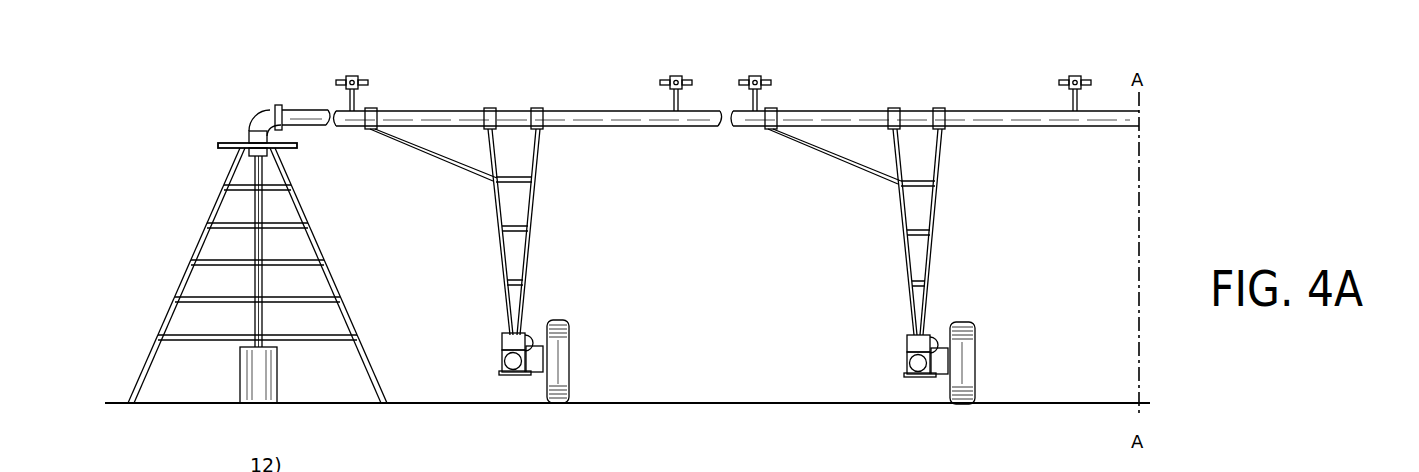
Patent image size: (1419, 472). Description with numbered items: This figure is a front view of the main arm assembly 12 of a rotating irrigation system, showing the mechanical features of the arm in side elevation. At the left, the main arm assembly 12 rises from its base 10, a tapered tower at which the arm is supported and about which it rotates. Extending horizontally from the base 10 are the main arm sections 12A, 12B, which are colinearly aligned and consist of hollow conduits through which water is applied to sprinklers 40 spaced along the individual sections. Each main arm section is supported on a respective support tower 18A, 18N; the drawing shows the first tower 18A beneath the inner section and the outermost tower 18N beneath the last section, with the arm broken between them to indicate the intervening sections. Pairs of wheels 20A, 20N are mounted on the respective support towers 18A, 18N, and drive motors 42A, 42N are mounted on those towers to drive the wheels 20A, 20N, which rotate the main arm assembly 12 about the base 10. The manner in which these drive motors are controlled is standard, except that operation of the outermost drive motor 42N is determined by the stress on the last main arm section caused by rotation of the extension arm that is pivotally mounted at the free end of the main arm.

The base 10 is at (318, 259).
The main arm assembly 12 is at (971, 98).
The main arm section 12A is at (400, 110).
The main arm section 12B is at (562, 111).
The sprinklers 40 is at (352, 76).
The support tower 18A is at (530, 231).
The support tower 18N is at (933, 240).
The drive motor 42A is at (538, 300).
The drive motor 42N is at (935, 332).
The wheels 20A is at (558, 357).
The wheels 20N is at (958, 362).